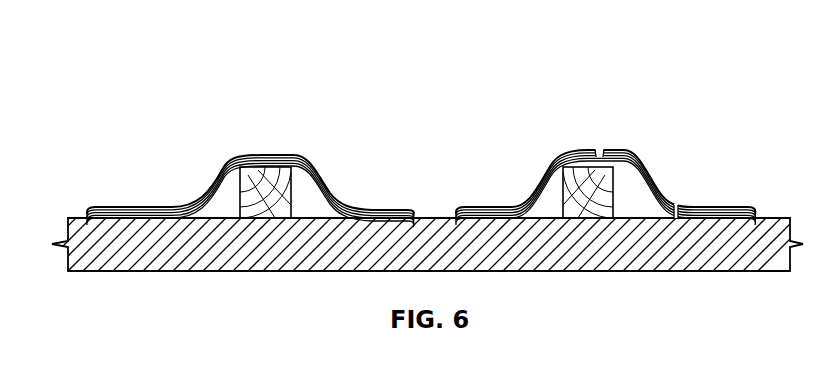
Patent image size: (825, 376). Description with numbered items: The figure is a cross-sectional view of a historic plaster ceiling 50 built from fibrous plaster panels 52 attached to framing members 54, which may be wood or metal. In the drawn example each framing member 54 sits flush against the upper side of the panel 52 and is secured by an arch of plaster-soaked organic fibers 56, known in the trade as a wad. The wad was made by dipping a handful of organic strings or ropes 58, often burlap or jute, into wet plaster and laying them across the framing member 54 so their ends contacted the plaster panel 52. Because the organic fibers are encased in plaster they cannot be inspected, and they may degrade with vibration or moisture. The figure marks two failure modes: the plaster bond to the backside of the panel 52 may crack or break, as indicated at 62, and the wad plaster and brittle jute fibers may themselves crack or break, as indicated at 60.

The historic plaster ceiling 50 is at (425, 120).
The fibrous plaster panel 52 is at (467, 262).
The framing member 54 is at (257, 195).
The arch of plaster-soaked organic fibers 56 is at (320, 158).
The organic strings or ropes 58 is at (327, 203).
The crack or break in the wad 60 is at (600, 147).
The crack or break in the plaster bond 62 is at (677, 221).